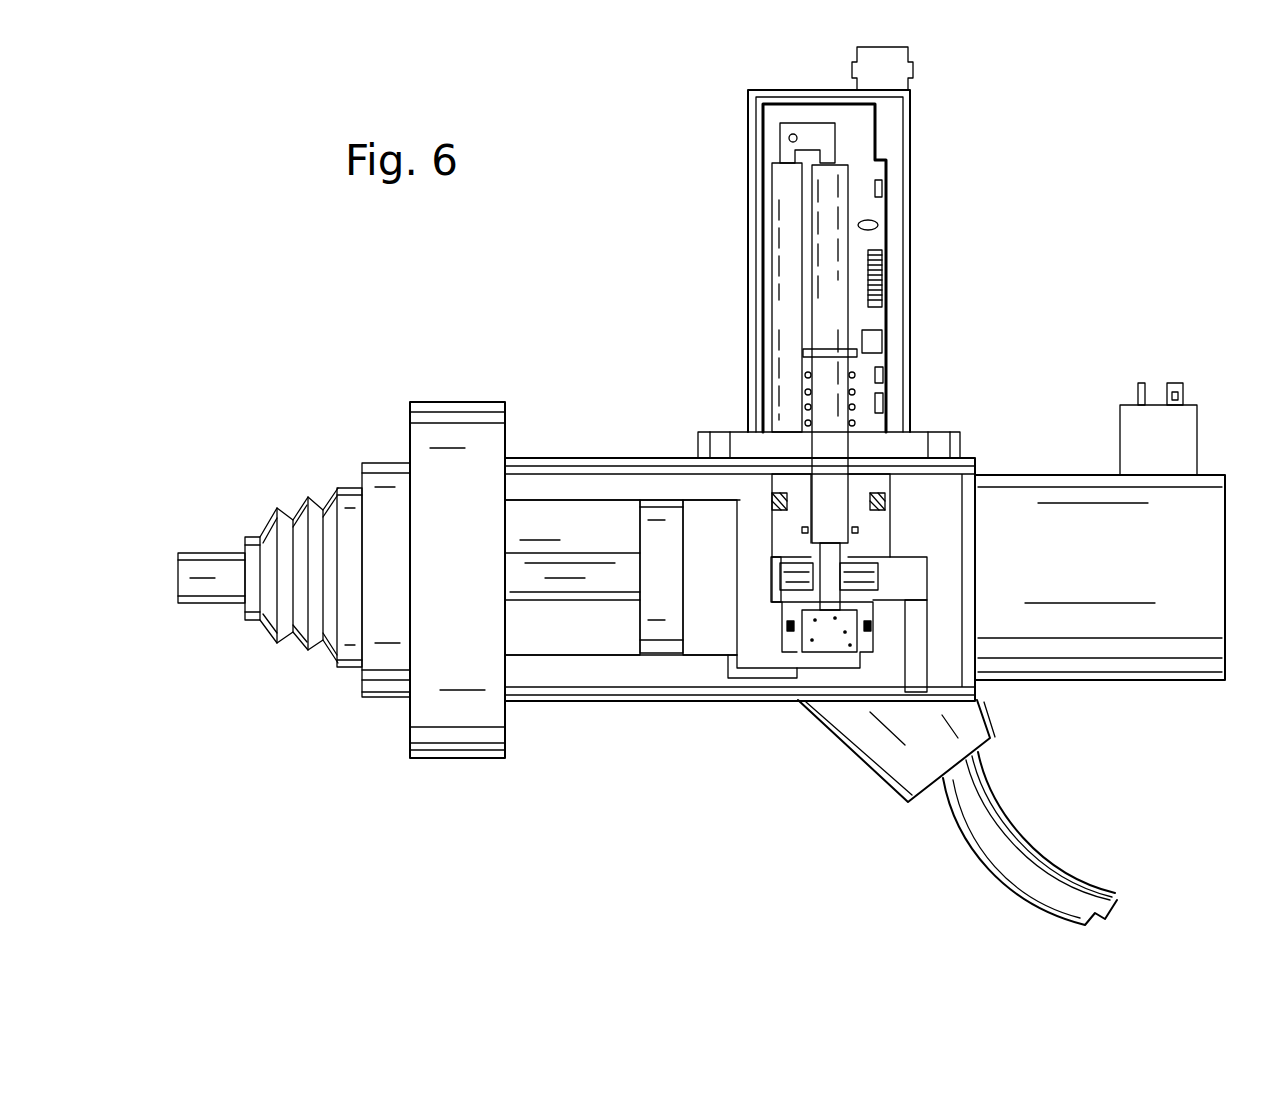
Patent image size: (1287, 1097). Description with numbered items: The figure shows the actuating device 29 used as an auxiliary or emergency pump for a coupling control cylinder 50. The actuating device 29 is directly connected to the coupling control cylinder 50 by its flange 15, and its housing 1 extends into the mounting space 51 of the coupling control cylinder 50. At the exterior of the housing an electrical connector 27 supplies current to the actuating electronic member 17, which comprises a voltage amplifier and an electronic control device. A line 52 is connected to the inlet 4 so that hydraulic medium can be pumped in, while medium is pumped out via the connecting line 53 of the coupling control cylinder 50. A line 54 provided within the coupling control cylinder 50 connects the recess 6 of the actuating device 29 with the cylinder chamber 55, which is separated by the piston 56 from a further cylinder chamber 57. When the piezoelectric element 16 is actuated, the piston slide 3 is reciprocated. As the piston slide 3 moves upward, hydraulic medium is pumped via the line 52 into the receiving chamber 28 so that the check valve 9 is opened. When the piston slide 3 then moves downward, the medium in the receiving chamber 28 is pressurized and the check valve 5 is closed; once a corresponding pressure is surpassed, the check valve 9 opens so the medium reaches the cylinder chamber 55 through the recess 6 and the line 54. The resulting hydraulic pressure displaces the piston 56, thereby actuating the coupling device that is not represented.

The housing 1 is at (880, 540).
The piston slide 3 is at (826, 263).
The inlet 4 is at (830, 582).
The check valve 5 is at (813, 563).
The recess 6 is at (822, 635).
The check valve 9 is at (835, 615).
The flange 15 is at (950, 442).
The piezoelectric element 16 is at (782, 278).
The actuating electronic member 17 is at (877, 347).
The electrical connector 27 is at (890, 68).
The receiving chamber 28 is at (850, 570).
The actuating device 29 is at (892, 283).
The coupling control cylinder 50 is at (605, 683).
The mounting space 51 is at (768, 527).
The line 52 is at (915, 655).
The connecting line 53 is at (1003, 853).
The line 54 is at (758, 672).
The cylinder chamber 55 is at (705, 633).
The piston 56 is at (662, 538).
The further cylinder chamber 57 is at (558, 523).